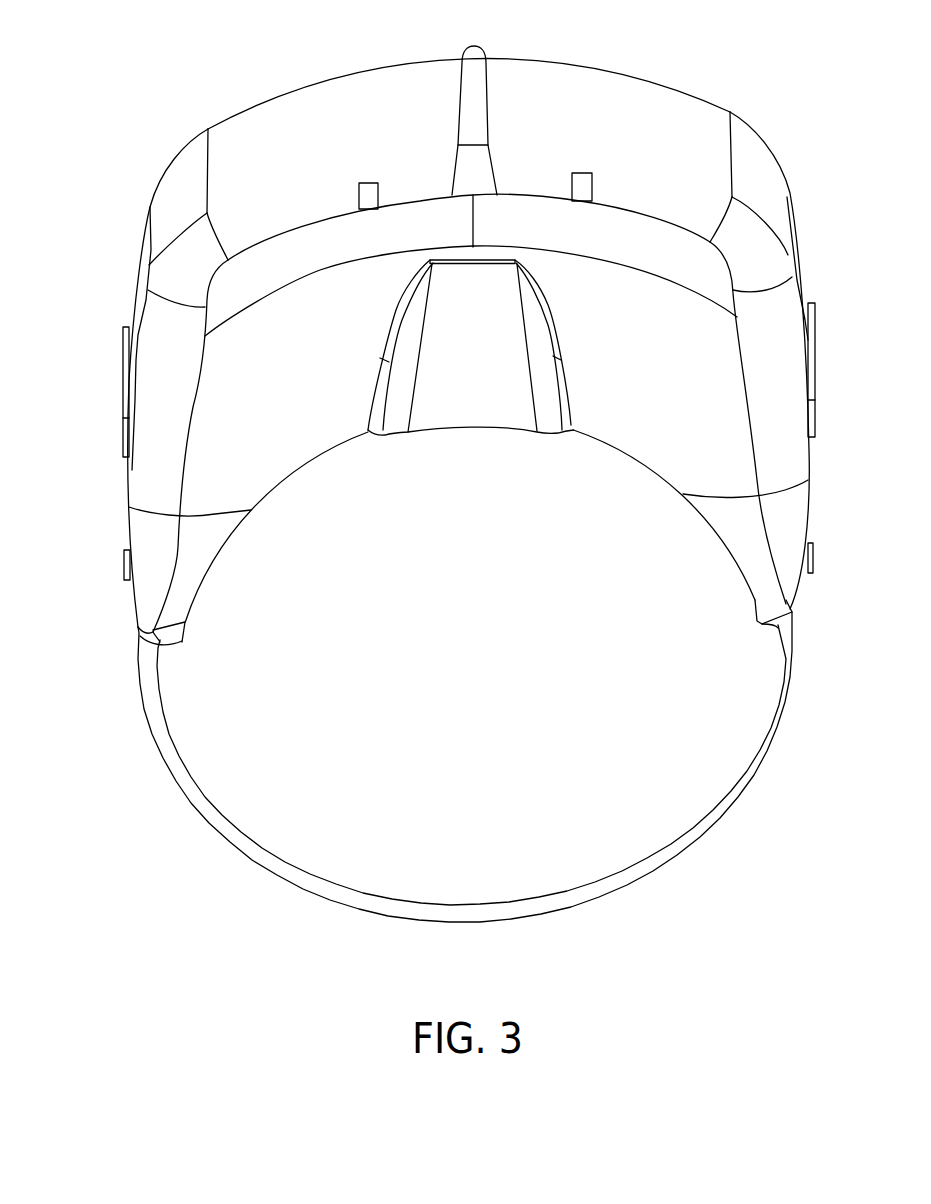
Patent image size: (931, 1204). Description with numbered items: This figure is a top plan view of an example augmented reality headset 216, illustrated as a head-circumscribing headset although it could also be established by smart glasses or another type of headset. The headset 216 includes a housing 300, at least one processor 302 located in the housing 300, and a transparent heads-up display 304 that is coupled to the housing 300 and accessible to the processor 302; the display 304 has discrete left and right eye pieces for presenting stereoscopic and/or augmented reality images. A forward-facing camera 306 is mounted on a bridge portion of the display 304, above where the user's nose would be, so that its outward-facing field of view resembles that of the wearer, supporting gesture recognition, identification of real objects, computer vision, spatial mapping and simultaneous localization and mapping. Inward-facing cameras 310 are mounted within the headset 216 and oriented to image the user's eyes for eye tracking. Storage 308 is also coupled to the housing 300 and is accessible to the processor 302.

The headset 216 is at (101, 61).
The housing 300 is at (770, 717).
The processor 302 is at (330, 270).
The display 304 is at (332, 80).
The forward-facing camera 306 is at (485, 50).
The storage 308 is at (607, 262).
The inward-facing cameras 310 is at (366, 183).